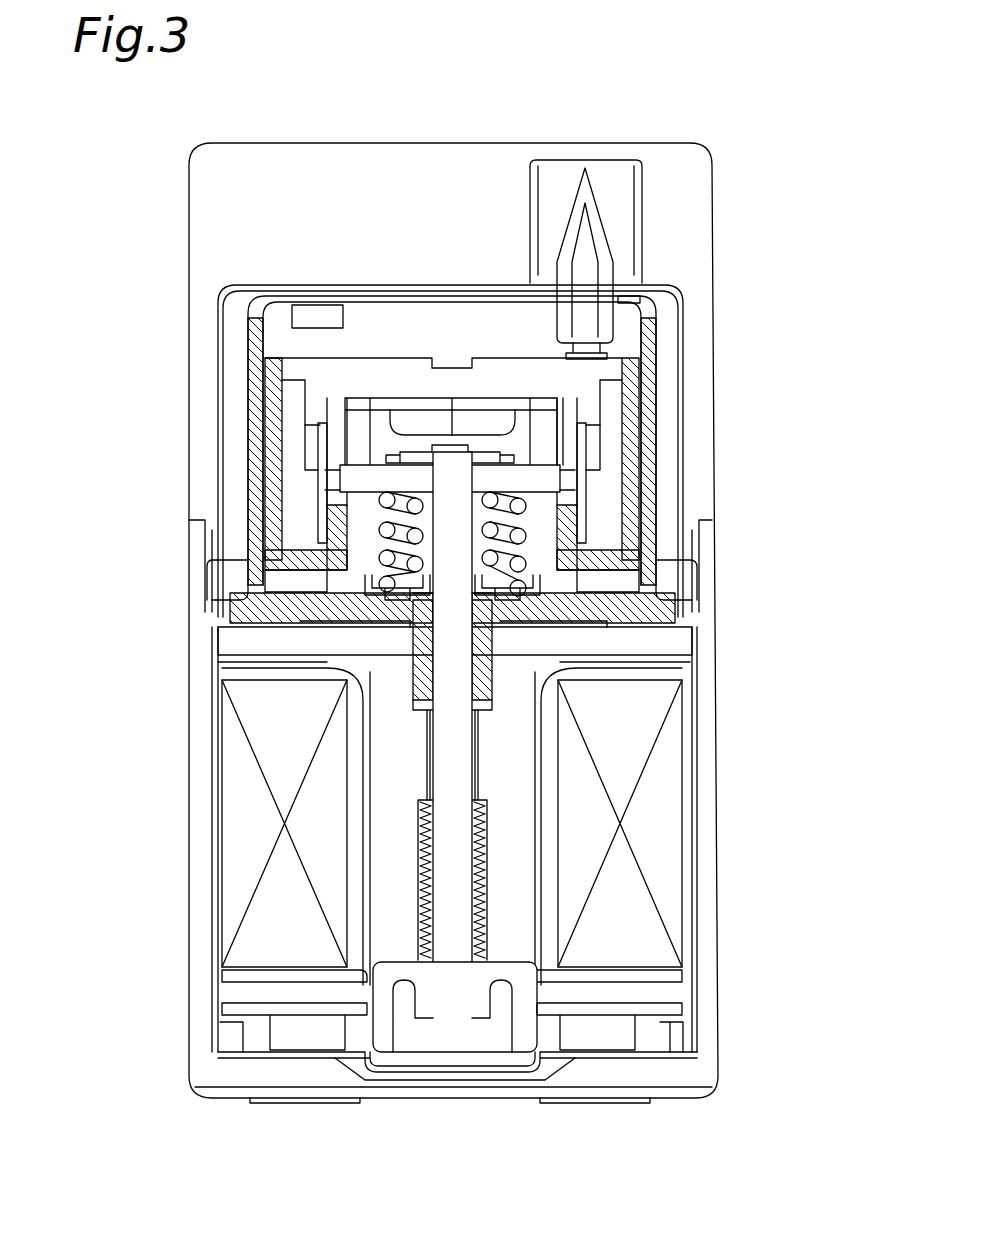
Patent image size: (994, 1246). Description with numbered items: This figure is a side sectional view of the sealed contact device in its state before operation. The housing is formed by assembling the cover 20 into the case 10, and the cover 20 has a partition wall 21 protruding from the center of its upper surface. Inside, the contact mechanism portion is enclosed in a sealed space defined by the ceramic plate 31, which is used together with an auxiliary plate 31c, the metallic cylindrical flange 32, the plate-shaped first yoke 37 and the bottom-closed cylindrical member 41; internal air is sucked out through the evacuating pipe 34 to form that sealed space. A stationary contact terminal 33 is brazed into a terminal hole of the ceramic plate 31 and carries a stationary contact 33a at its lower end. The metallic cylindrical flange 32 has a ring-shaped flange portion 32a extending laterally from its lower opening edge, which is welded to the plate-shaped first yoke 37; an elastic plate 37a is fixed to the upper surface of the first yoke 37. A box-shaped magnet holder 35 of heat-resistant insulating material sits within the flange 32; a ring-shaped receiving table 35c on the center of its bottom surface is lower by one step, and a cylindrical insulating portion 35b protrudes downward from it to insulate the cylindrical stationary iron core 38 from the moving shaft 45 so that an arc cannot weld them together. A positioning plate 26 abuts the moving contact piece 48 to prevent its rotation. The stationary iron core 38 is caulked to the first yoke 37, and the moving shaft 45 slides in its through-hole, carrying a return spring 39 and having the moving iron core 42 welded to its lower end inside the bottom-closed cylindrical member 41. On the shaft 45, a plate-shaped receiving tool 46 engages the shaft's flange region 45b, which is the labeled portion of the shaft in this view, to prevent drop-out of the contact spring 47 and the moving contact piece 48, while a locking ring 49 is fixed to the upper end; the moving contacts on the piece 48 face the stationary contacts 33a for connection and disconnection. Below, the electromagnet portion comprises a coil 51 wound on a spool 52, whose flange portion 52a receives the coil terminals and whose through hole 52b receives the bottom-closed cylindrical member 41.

The case 10 is at (703, 1033).
The cover 20 is at (683, 193).
The partition wall 21 is at (365, 165).
The positioning plate 26 is at (320, 458).
The ceramic plate 31 is at (630, 315).
The auxiliary plate 31c is at (580, 378).
The metallic cylindrical flange 32 is at (250, 340).
The ring-shaped flange portion 32a is at (668, 620).
The stationary contact terminal 33 is at (412, 420).
The stationary contact 33a is at (452, 328).
The evacuating pipe 34 is at (583, 190).
The magnet holder 35 is at (630, 428).
The cylindrical insulating portion 35b is at (420, 692).
The ring-shaped receiving table 35c is at (505, 612).
The plate-shaped first yoke 37 is at (680, 640).
The elastic plate 37a is at (540, 607).
The cylindrical stationary iron core 38 is at (525, 848).
The return spring 39 is at (480, 950).
The bottom-closed cylindrical member 41 is at (540, 1068).
The moving iron core 42 is at (385, 1028).
The moving shaft 45 is at (455, 1035).
The flange of movable shaft 45b is at (420, 588).
The plate-shaped receiving tool 46 is at (387, 590).
The contact spring 47 is at (388, 547).
The moving contact piece 48 is at (356, 482).
The locking ring 49 is at (484, 455).
The coil 51 is at (663, 882).
The spool 52 is at (272, 967).
The flange portion 52a is at (451, 1092).
The through hole 52b is at (362, 890).